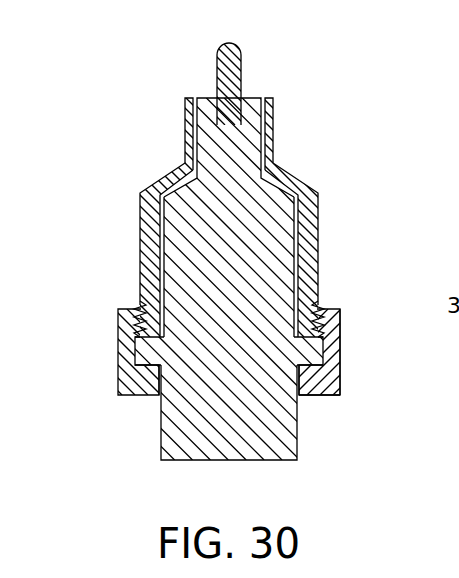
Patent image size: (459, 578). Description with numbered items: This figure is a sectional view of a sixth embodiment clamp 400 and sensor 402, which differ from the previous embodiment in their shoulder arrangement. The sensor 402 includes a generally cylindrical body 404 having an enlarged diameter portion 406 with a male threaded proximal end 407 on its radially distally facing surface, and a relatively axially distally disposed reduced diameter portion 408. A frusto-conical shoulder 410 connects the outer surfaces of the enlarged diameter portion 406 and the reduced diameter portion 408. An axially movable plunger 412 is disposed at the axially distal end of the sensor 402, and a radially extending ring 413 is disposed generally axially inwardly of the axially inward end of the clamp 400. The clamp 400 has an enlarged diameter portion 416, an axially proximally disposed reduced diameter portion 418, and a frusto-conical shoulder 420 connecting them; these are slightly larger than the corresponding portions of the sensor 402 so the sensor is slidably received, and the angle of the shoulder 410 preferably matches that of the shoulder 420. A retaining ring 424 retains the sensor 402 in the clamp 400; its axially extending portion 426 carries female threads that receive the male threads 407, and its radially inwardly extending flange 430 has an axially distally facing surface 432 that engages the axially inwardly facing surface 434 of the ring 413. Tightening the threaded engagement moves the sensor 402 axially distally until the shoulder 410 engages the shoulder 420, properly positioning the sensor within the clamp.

The clamp 400 is at (345, 210).
The sensor 402 is at (171, 439).
The generally cylindrical body 404 is at (243, 427).
The enlarged diameter portion 406 is at (273, 302).
The male threaded proximal end 407 is at (136, 308).
The reduced diameter portion 408 is at (248, 132).
The frusto-conical shoulder 410 is at (268, 177).
The axially movable plunger 412 is at (238, 43).
The radially extending ring 413 is at (287, 355).
The enlarged diameter portion 416 is at (318, 258).
The reduced diameter portion 418 is at (273, 110).
The frusto-conical shoulder 420 is at (288, 193).
The retaining ring 424 is at (358, 405).
The axially extending portion 426 is at (118, 325).
The radially inwardly extending flange 430 is at (315, 398).
The axially distally facing surface 432 is at (121, 372).
The axially inwardly facing surface 434 is at (122, 343).